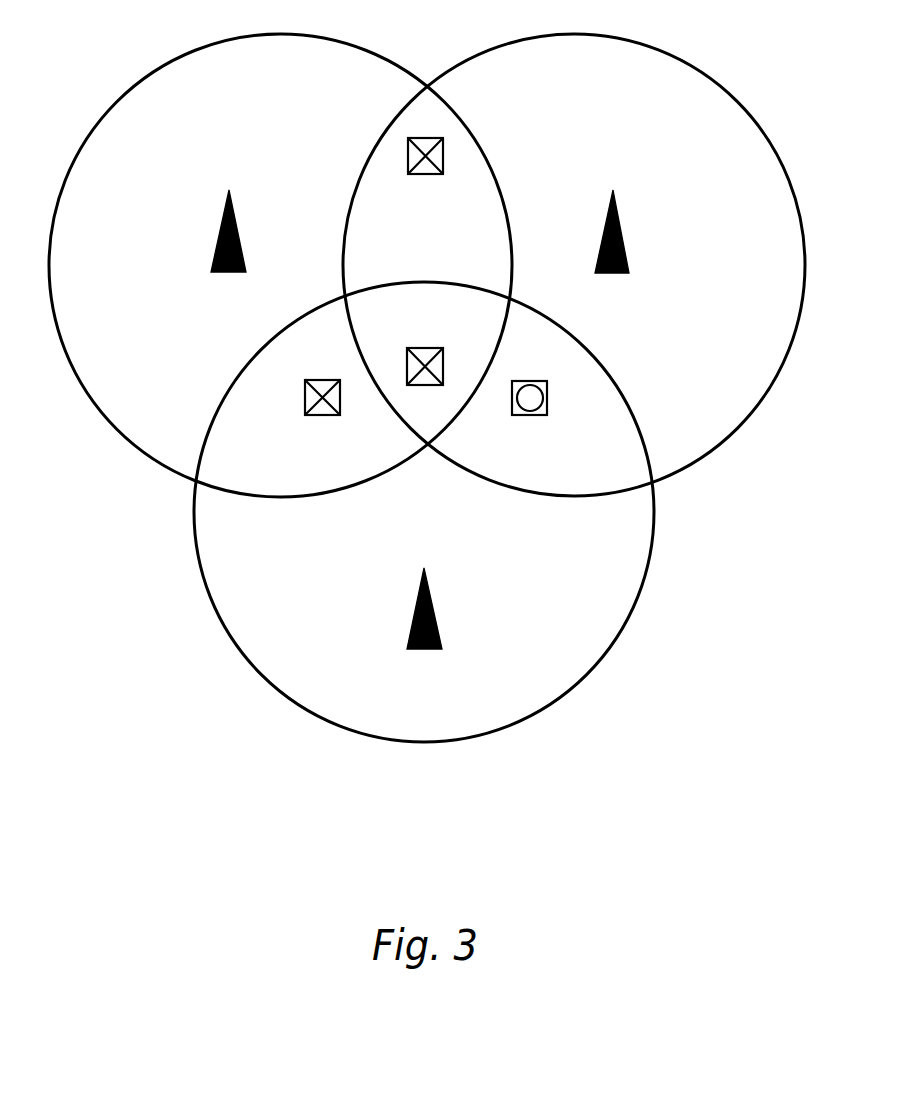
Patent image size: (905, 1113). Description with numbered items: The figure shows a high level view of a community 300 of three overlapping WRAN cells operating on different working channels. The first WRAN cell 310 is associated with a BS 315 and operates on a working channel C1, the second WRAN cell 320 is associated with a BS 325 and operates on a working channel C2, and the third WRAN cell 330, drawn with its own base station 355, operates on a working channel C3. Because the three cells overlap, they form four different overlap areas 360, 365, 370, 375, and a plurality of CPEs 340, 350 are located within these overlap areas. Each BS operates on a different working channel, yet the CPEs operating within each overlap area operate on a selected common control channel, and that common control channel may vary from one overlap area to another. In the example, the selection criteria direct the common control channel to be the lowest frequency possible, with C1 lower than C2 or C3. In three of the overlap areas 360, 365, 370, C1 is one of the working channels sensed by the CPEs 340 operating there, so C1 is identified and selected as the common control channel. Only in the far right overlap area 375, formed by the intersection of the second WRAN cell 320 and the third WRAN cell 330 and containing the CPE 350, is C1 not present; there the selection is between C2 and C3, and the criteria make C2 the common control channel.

The community 300 is at (450, 833).
The first WRAN cell 310 is at (163, 463).
The base station 315 is at (224, 212).
The second WRAN cell 320 is at (688, 465).
The base station 325 is at (618, 215).
The third WRAN cell 330 is at (545, 710).
The CPE 340 is at (443, 160).
The CPE 350 is at (547, 396).
The third base station 355 is at (430, 595).
The overlap area 360 is at (287, 461).
The overlap area 365 is at (455, 234).
The overlap area 370 is at (455, 331).
The overlap area 375 is at (622, 463).